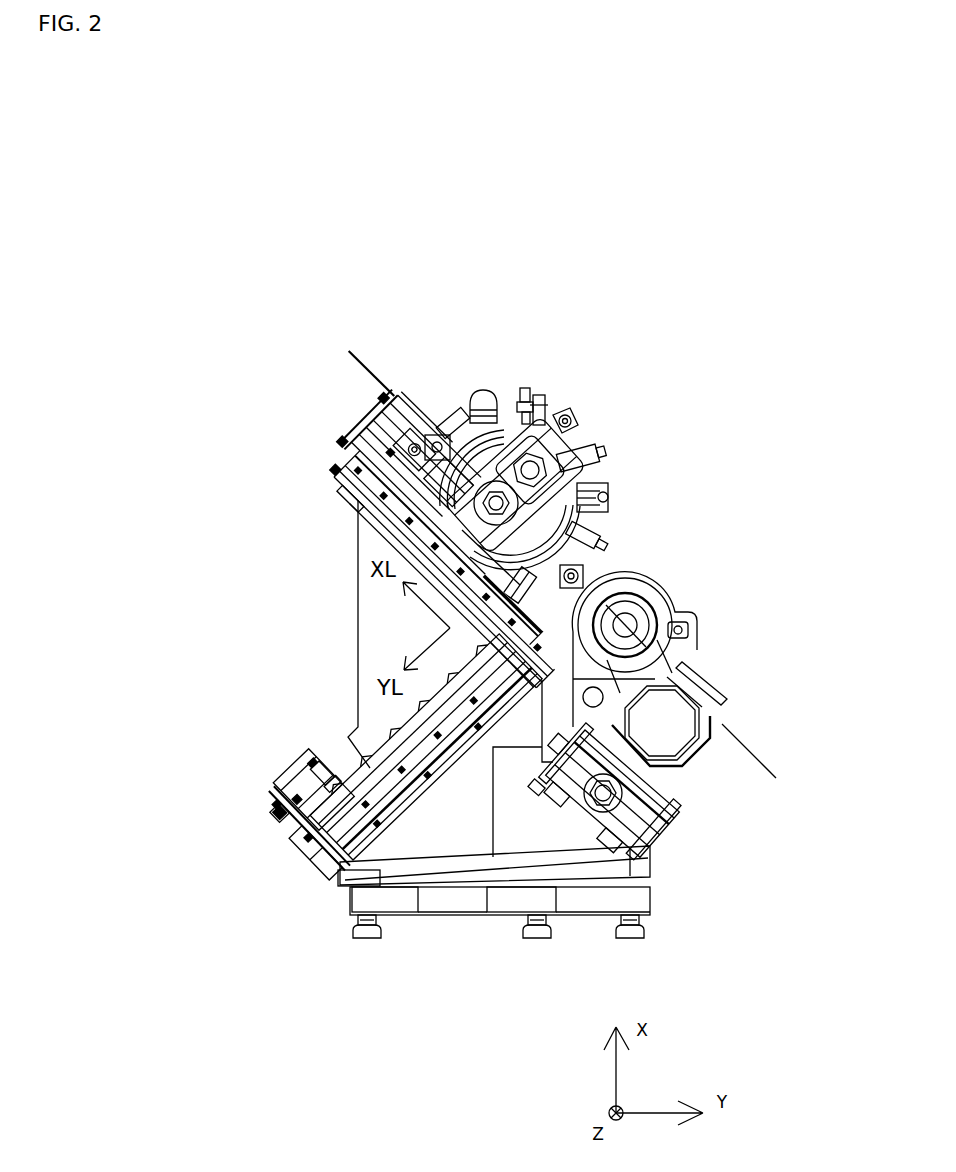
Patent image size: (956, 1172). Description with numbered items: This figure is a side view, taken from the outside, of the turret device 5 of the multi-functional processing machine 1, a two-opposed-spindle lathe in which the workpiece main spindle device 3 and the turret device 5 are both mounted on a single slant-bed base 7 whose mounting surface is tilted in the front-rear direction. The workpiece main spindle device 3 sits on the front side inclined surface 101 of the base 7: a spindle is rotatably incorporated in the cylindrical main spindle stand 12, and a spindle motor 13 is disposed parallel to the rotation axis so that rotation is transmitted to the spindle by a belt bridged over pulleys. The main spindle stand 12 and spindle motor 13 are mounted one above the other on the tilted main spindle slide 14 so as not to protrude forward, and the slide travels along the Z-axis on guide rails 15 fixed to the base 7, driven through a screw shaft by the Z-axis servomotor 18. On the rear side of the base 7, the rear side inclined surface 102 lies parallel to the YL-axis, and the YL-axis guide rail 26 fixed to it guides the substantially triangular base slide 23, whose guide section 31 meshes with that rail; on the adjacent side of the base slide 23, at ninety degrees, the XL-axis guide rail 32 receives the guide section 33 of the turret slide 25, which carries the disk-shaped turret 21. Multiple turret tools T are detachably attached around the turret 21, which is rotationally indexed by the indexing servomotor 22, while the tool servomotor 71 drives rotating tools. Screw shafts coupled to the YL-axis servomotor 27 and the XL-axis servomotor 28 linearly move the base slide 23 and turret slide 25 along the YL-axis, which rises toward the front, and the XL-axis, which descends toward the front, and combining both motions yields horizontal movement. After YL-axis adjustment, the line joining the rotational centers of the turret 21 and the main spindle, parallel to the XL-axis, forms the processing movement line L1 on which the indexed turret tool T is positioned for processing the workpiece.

The multi-functional processing machine 1 is at (425, 234).
The workpiece main spindle device 3 is at (722, 625).
The turret device 5 is at (588, 345).
The base 7 is at (422, 903).
The main spindle stand 12 is at (640, 588).
The spindle motor 13 is at (678, 730).
The main spindle slide 14 is at (678, 817).
The guide rail 15 is at (653, 870).
The Z-axis servomotor 18 is at (603, 797).
The turret 21 is at (593, 480).
The indexing servomotor 22 is at (570, 443).
The base slide 23 is at (375, 620).
The turret slide 25 is at (540, 430).
The YL-axis guide rail 26 is at (298, 852).
The YL-axis servomotor 27 is at (285, 777).
The XL-axis servomotor 28 is at (370, 412).
The guide section 31 is at (397, 763).
The XL-axis guide rail 32 is at (337, 480).
The guide section 33 is at (343, 440).
The tool servomotor 71 is at (350, 500).
The front side inclined surface 101 is at (540, 770).
The rear side inclined surface 102 is at (335, 852).
The processing movement line L1 is at (733, 732).
The turret tool T is at (593, 572).